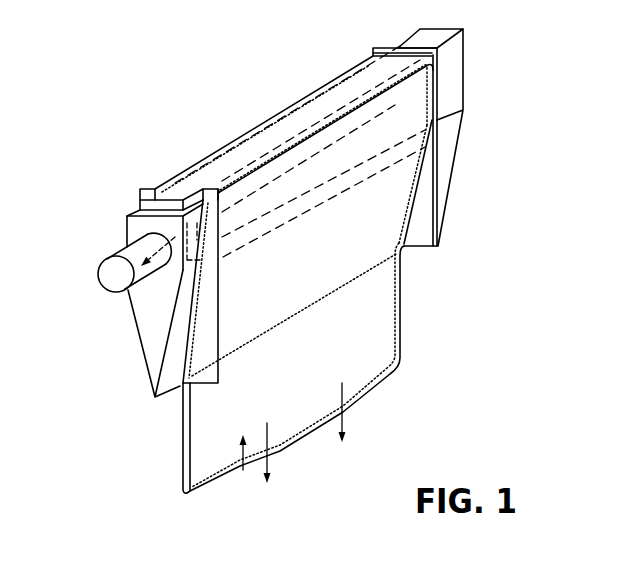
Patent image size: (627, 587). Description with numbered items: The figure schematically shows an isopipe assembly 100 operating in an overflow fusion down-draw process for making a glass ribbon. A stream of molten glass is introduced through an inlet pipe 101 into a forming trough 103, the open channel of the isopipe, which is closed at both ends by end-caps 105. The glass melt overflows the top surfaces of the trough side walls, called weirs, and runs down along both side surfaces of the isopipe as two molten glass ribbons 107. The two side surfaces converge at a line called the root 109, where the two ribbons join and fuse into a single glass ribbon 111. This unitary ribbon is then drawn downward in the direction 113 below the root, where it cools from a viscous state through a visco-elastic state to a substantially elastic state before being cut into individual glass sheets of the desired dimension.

The isopipe assembly 100 is at (510, 88).
The inlet pipe 101 is at (112, 283).
The forming trough 103 is at (256, 182).
The end-caps 105 is at (459, 197).
The molten glass ribbons 107 is at (340, 244).
The root 109 is at (169, 401).
The glass ribbon 111 is at (243, 470).
The drawing direction 113 is at (357, 425).